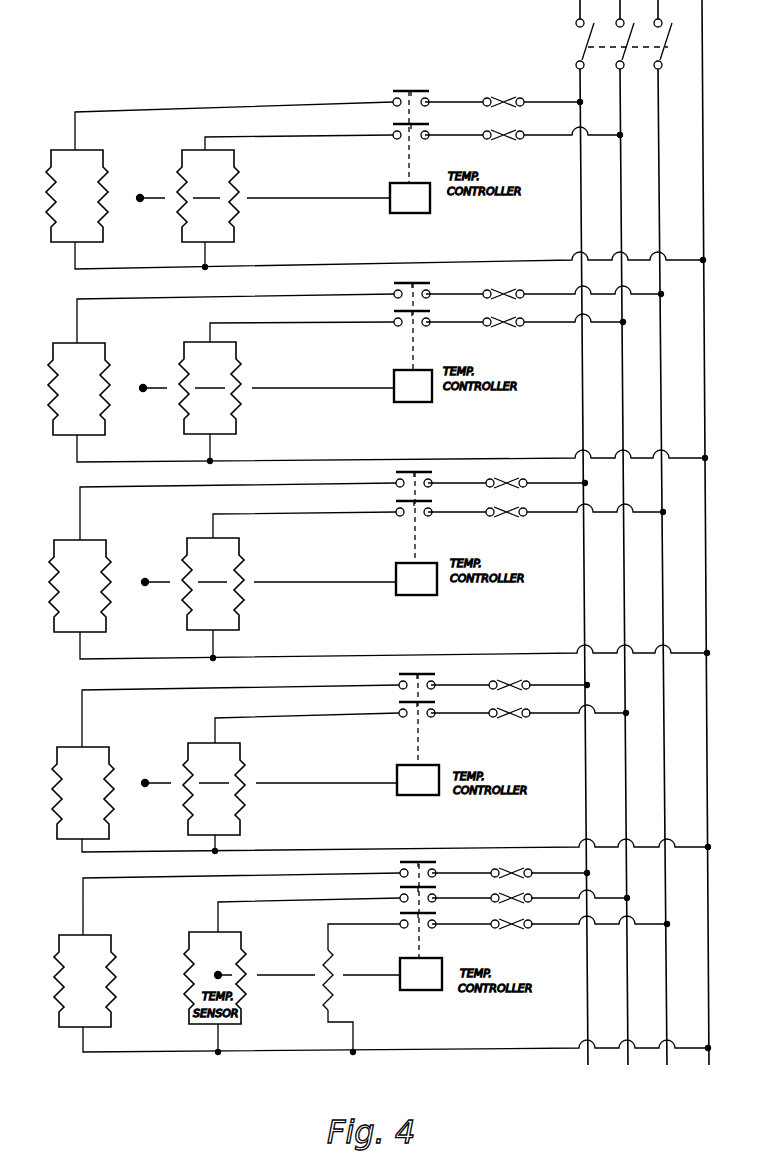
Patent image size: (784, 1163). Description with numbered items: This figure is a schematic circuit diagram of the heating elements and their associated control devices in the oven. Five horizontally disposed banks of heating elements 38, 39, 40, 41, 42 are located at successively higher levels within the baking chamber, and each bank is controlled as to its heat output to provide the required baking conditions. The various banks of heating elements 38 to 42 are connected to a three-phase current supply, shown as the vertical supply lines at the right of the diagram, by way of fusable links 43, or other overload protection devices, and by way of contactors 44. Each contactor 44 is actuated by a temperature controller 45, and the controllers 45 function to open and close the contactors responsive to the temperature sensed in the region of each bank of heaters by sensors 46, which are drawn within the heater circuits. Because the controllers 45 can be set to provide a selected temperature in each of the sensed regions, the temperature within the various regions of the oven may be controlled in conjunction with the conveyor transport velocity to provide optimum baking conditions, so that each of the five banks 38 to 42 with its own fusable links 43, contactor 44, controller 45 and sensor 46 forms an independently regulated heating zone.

The bank of heating elements 38 is at (115, 932).
The bank of heating elements 39 is at (115, 755).
The bank of heating elements 40 is at (115, 552).
The bank of heating elements 41 is at (115, 362).
The bank of heating elements 42 is at (112, 180).
The fusable link 43 is at (503, 93).
The contactor 44 is at (408, 82).
The temperature controller 45 is at (426, 205).
The sensor 46 is at (218, 971).